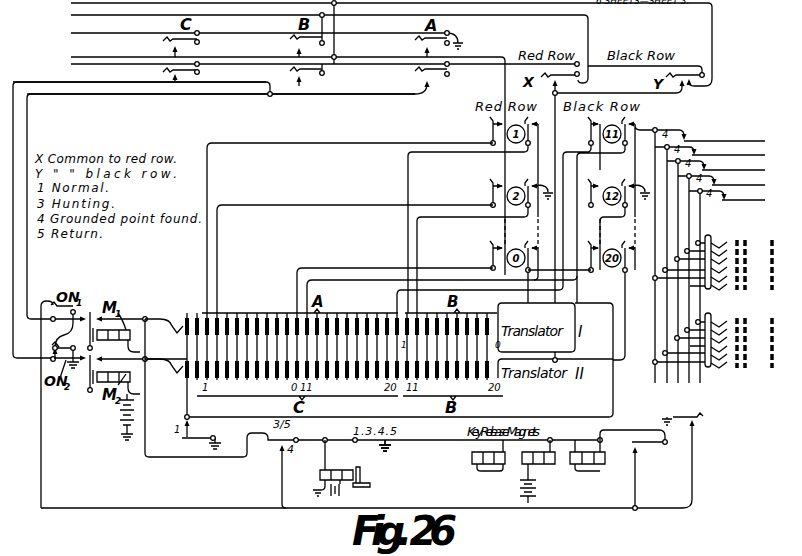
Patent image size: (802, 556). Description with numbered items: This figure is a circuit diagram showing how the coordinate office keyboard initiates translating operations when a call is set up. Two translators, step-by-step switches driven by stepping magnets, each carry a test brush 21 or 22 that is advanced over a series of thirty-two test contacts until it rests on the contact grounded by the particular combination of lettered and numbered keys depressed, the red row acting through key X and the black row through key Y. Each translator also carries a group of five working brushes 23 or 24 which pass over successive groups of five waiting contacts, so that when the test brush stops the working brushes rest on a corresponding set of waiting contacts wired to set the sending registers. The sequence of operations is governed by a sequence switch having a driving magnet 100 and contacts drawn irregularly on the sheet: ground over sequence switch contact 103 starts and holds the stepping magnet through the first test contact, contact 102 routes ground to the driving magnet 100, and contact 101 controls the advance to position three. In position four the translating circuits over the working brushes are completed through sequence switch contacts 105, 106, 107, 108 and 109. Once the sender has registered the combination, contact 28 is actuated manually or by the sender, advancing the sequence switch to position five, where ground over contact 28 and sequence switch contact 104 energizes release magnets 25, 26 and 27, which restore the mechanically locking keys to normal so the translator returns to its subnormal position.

The test brush 21 is at (164, 318).
The test brush 22 is at (164, 358).
The working brushes 23 is at (709, 240).
The working brushes 24 is at (709, 322).
The release magnet 25 is at (474, 466).
The release magnet 26 is at (536, 472).
The release magnet 27 is at (578, 466).
The contact 28 is at (686, 418).
The driving magnet 100 is at (341, 468).
The sequence switch contact 101 is at (386, 455).
The sequence switch contact 102 is at (267, 476).
The sequence switch contact 103 is at (199, 447).
The sequence switch contact 104 is at (652, 438).
The sequence switch contact 105 is at (709, 255).
The sequence switch contact 106 is at (710, 263).
The sequence switch contact 107 is at (716, 270).
The sequence switch contact 108 is at (721, 278).
The sequence switch contact 109 is at (727, 285).